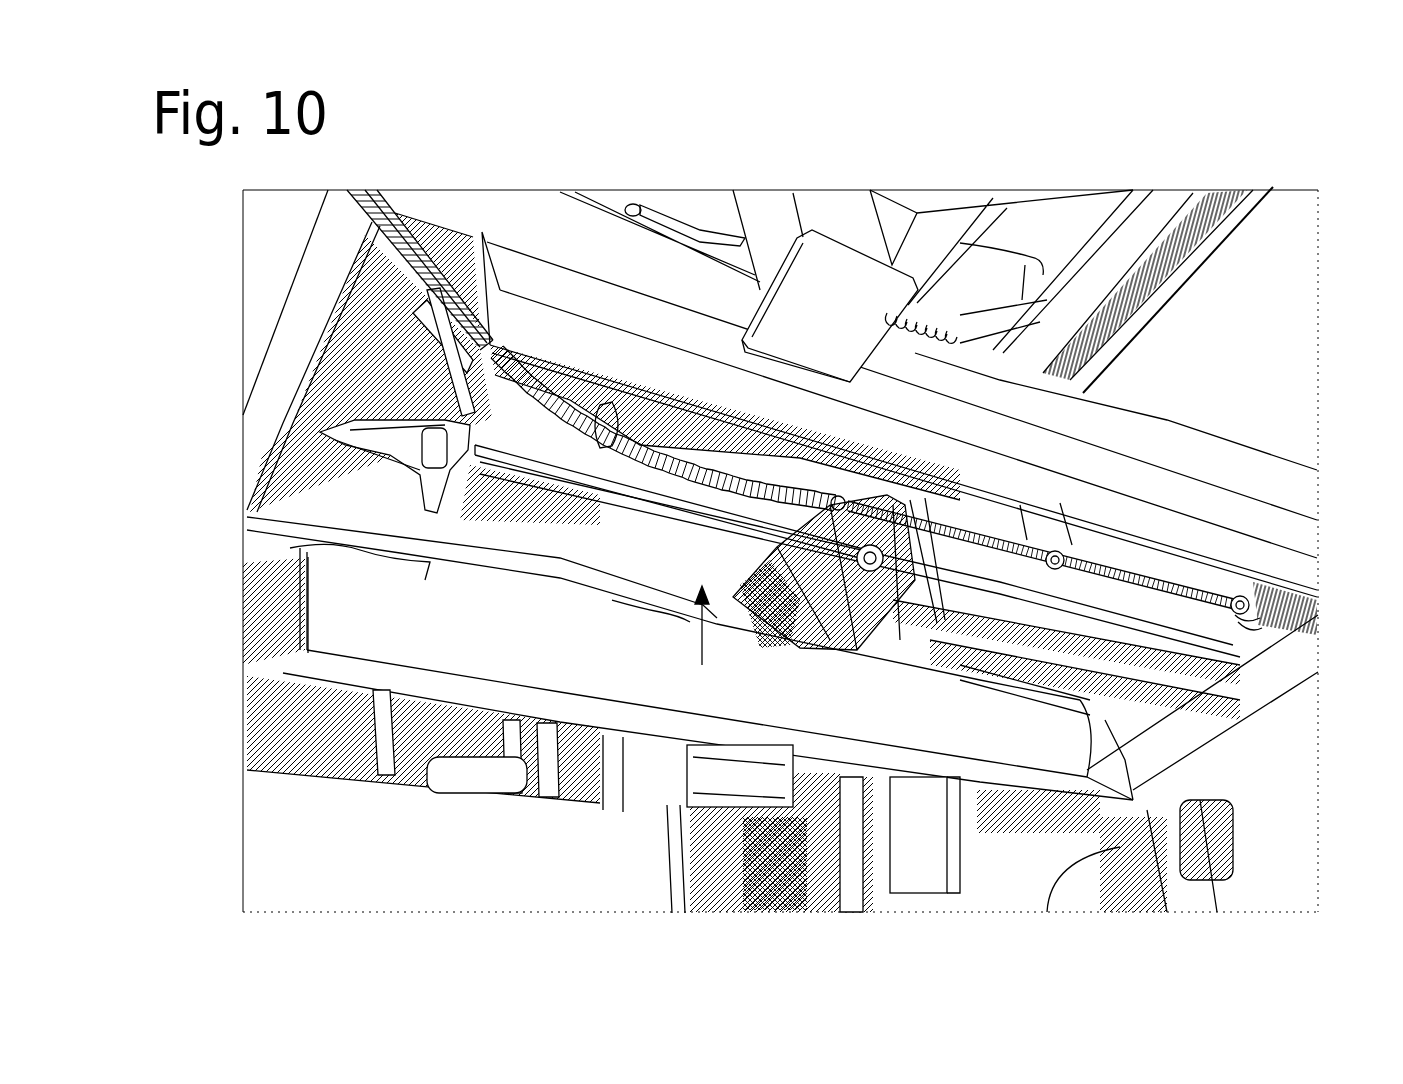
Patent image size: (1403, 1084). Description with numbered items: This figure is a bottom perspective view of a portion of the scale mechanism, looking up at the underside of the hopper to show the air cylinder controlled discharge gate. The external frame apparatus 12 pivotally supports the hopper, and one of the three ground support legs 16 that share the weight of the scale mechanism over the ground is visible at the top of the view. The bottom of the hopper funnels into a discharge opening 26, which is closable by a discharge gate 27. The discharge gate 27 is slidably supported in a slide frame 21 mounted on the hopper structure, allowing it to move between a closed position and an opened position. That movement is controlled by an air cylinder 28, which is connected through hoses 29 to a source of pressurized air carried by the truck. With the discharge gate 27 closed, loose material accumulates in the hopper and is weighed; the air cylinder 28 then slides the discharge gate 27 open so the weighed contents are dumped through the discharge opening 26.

The frame apparatus 12 is at (1223, 240).
The ground support legs 16 is at (845, 290).
The slide frame 21 is at (347, 608).
The discharge opening 26 is at (702, 665).
The discharge gate 27 is at (568, 530).
The air cylinder 28 is at (1167, 603).
The hoses 29 is at (353, 270).